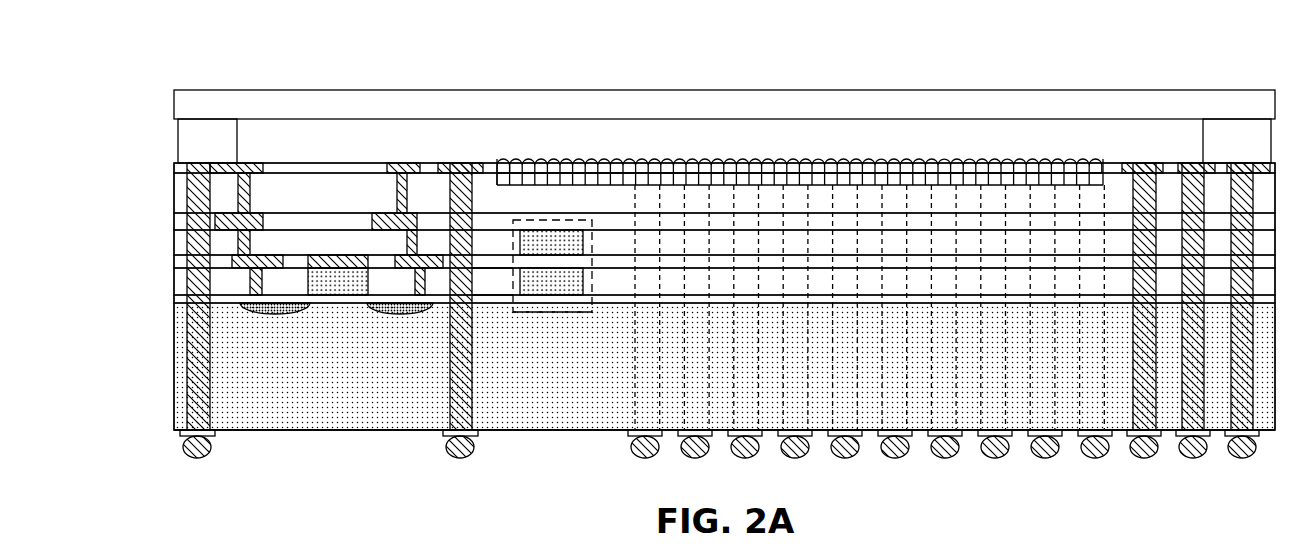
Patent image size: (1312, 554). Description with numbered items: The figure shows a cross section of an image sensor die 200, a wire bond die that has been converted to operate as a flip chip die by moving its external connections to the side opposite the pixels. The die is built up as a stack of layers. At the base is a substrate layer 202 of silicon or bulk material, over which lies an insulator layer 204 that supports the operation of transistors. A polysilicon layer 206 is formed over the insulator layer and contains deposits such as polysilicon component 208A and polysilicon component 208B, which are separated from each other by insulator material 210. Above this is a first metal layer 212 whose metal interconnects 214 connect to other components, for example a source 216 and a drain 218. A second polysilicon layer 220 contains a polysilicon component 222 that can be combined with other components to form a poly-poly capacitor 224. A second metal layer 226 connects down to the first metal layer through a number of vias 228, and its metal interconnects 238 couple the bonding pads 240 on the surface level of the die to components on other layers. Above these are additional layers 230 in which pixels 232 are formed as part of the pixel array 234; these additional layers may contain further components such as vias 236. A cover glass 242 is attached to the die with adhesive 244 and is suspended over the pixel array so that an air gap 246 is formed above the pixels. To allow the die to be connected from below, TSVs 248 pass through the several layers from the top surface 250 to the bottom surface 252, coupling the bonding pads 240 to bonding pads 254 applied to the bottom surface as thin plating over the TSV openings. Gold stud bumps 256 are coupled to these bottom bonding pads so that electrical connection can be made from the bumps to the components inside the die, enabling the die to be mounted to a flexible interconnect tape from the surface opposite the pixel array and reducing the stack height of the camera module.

The image sensor die 200 is at (1150, 57).
The substrate layer 202 is at (176, 367).
The insulator layer 204 is at (173, 299).
The polysilicon layer 206 is at (173, 282).
The polysilicon component 208A is at (340, 283).
The polysilicon component 208B is at (555, 283).
The insulator material 210 is at (489, 283).
The first metal layer 212 is at (173, 262).
The metal interconnects 214 is at (393, 247).
The source 216 is at (275, 316).
The drain 218 is at (398, 315).
The second polysilicon layer 220 is at (175, 241).
The polysilicon component 222 is at (538, 238).
The poly-poly capacitor 224 is at (550, 313).
The second metal layer 226 is at (175, 203).
The vias 228 is at (411, 232).
The additional layers 230 is at (173, 177).
The pixels 232 is at (1095, 181).
The pixel array 234 is at (632, 150).
The vias 236 is at (402, 187).
The metal interconnects 238 is at (260, 206).
The bonding pads 240 is at (242, 165).
The cover glass 242 is at (178, 108).
The adhesive 244 is at (180, 150).
The air gap 246 is at (805, 140).
The TSVs 248 is at (207, 380).
The top surface 250 is at (925, 148).
The bottom surface 252 is at (322, 444).
The bonding pads 254 is at (627, 434).
The gold stud bumps 256 is at (208, 452).